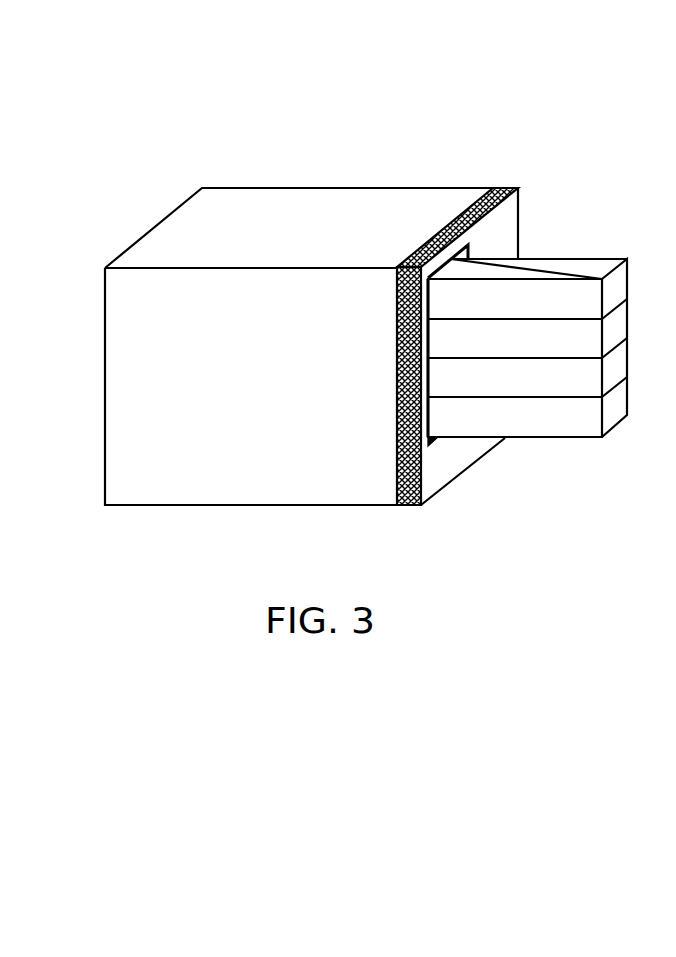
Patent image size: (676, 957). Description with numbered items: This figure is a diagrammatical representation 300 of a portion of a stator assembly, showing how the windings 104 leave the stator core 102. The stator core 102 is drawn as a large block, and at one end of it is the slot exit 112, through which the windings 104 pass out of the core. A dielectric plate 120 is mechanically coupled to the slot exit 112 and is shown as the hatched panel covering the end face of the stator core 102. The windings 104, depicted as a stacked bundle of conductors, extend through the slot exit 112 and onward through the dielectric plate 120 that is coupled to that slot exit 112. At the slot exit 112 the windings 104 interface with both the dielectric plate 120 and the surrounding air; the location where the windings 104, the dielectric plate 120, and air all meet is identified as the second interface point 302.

The diagrammatical representation 300 is at (556, 68).
The stator core 102 is at (328, 198).
The dielectric plate 120 is at (500, 188).
The slot exit 112 is at (470, 255).
The windings 104 is at (622, 248).
The second interface point 302 is at (438, 421).